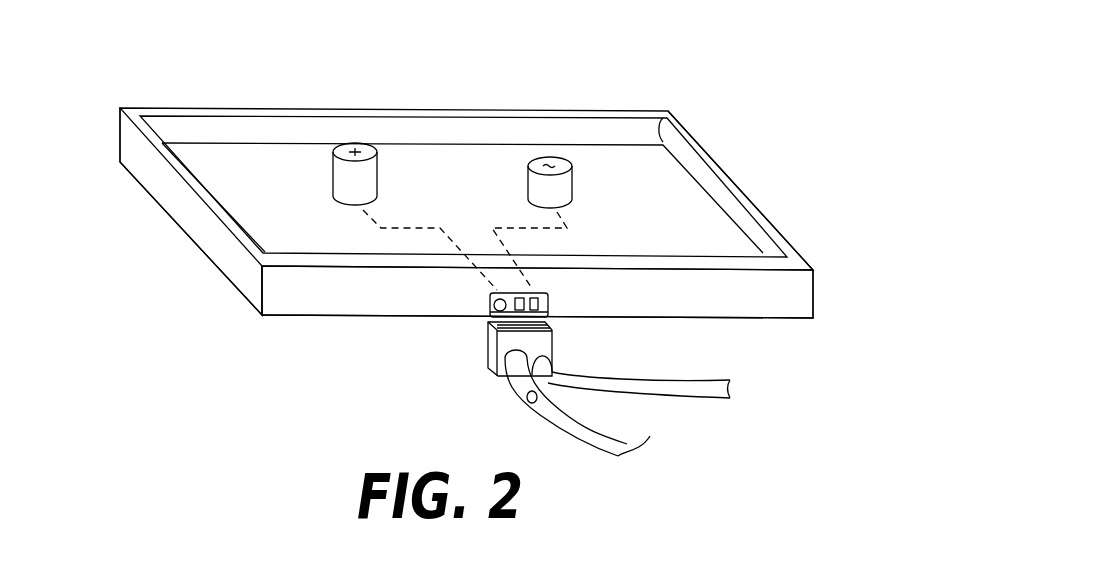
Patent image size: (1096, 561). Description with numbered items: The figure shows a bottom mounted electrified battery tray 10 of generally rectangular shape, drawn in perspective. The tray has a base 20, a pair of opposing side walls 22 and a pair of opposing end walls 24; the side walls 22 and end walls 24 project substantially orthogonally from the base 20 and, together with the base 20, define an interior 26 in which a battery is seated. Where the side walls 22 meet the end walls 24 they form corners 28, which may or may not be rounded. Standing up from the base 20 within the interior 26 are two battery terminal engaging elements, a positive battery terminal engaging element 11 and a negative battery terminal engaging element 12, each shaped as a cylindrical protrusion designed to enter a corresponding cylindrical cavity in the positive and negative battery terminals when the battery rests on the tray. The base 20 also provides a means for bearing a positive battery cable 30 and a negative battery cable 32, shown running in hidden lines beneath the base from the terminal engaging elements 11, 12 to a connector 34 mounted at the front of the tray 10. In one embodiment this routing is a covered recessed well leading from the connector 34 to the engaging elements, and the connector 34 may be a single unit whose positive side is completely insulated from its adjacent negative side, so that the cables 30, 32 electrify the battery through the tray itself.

The electrified battery tray 10 is at (749, 144).
The positive battery terminal engaging element 11 is at (333, 158).
The negative battery terminal engaging element 12 is at (528, 163).
The base 20 is at (707, 232).
The side walls 22 is at (497, 117).
The end walls 24 is at (157, 183).
The interior 26 is at (413, 167).
The corners 28 is at (667, 147).
The positive battery cable 30 is at (424, 229).
The negative battery cable 32 is at (592, 384).
The connector 34 is at (488, 322).